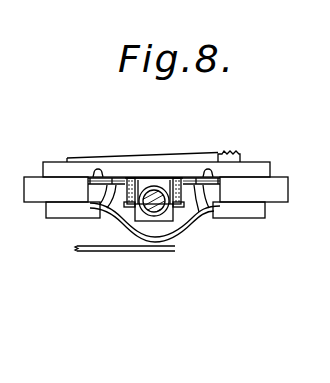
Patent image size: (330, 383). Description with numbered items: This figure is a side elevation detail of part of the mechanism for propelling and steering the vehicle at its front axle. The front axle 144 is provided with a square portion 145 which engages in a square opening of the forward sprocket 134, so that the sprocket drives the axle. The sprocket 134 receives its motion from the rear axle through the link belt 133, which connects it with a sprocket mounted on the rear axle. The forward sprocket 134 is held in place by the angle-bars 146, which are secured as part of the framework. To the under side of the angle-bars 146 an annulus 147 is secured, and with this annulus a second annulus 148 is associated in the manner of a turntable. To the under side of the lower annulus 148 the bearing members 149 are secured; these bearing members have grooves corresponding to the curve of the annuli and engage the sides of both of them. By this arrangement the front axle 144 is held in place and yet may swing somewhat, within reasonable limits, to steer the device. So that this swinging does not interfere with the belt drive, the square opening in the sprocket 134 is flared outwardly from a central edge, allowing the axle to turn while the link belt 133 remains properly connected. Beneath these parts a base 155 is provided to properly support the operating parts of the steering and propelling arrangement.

The link belt 133 is at (78, 250).
The sprocket 134 is at (102, 208).
The front axle 144 is at (157, 194).
The square portion 145 is at (140, 234).
The angle-bars 146 is at (71, 166).
The annulus 147 is at (193, 182).
The second annulus 148 is at (215, 180).
The bearing members 149 is at (120, 184).
The base 155 is at (184, 240).